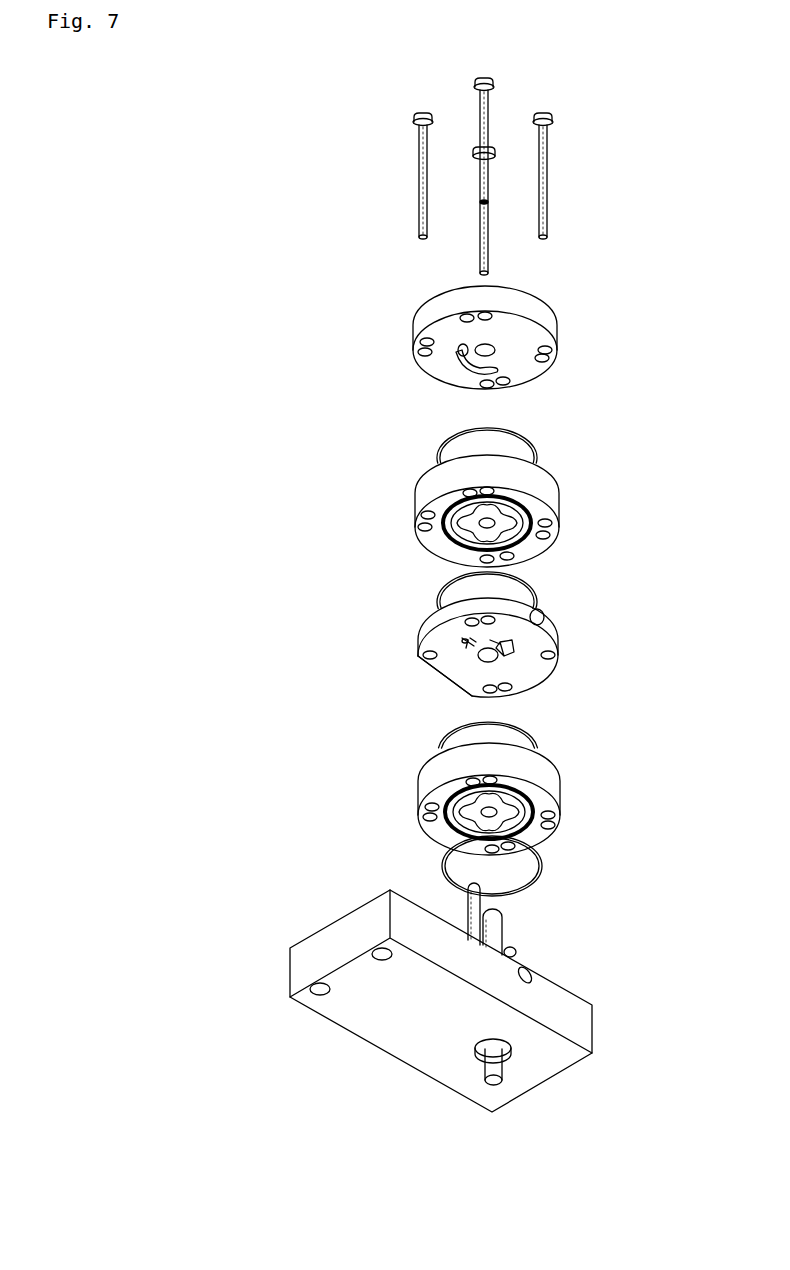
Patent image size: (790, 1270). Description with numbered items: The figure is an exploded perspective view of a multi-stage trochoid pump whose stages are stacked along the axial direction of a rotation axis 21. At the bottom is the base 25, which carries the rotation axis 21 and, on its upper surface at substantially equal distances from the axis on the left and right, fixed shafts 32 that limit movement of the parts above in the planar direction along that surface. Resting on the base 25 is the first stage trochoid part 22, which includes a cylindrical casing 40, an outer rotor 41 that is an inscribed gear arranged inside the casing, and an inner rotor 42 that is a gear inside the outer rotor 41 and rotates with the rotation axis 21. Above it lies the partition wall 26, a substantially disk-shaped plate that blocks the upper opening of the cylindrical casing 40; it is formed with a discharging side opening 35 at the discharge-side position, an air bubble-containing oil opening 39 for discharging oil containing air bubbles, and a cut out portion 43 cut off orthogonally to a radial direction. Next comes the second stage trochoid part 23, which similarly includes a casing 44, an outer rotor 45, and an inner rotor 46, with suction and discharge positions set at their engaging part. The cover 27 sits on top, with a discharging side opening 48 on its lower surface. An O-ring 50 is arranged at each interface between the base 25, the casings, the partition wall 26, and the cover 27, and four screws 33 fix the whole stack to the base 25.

The screw 33 is at (420, 202).
The cover 27 is at (553, 322).
The discharging side opening 48 is at (460, 358).
The O-ring 50 is at (535, 447).
The casing 44 is at (535, 481).
The second stage trochoid part 23 is at (552, 497).
The outer rotor 45 is at (462, 520).
The inner rotor 46 is at (462, 541).
The partition wall 26 is at (542, 630).
The air bubble-containing oil opening 39 is at (458, 645).
The discharging side opening 35 is at (520, 655).
The cut out portion 43 is at (440, 678).
The cylindrical casing 40 is at (514, 787).
The first stage trochoid part 22 is at (560, 778).
The outer rotor 41 is at (530, 808).
The inner rotor 42 is at (450, 815).
The base 25 is at (583, 1020).
The rotation axis 21 is at (500, 920).
The fixed shaft 32 is at (470, 900).